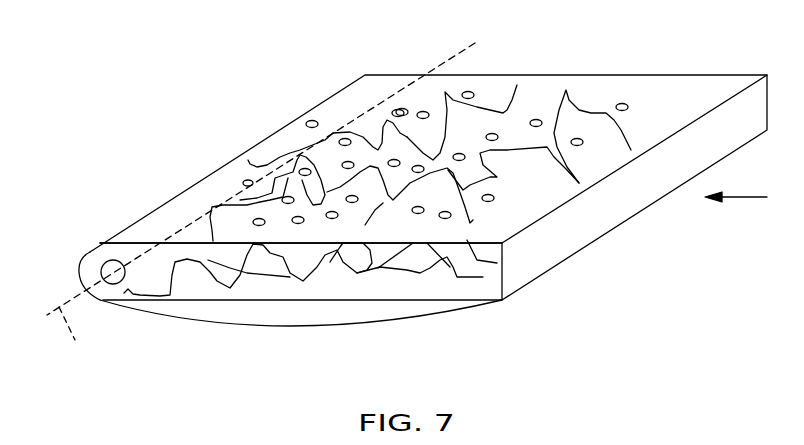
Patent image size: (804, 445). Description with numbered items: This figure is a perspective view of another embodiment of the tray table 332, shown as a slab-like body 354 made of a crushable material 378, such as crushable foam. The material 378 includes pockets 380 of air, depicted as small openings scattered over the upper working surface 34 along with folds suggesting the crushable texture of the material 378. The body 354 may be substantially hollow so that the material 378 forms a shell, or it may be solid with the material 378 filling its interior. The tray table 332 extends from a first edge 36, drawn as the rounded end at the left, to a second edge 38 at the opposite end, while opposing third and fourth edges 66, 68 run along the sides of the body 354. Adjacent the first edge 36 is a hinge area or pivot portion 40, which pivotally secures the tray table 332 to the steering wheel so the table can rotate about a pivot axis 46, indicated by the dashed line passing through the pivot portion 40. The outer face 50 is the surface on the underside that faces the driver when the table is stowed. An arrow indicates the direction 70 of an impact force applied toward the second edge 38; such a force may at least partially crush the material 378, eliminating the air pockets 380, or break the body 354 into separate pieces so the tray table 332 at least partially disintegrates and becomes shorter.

The tray table 332 is at (256, 86).
The working surface 34 is at (528, 113).
The body 354 is at (493, 93).
The first edge 36 is at (80, 275).
The second edge 38 is at (540, 255).
The pivot portion 40 is at (115, 292).
The pivot axis 46 is at (261, 207).
The outer face 50 is at (378, 322).
The third edge 66 is at (200, 289).
The fourth edge 68 is at (652, 75).
The direction 70 is at (744, 197).
The crushable material 378 is at (203, 187).
The pockets 380 is at (247, 180).